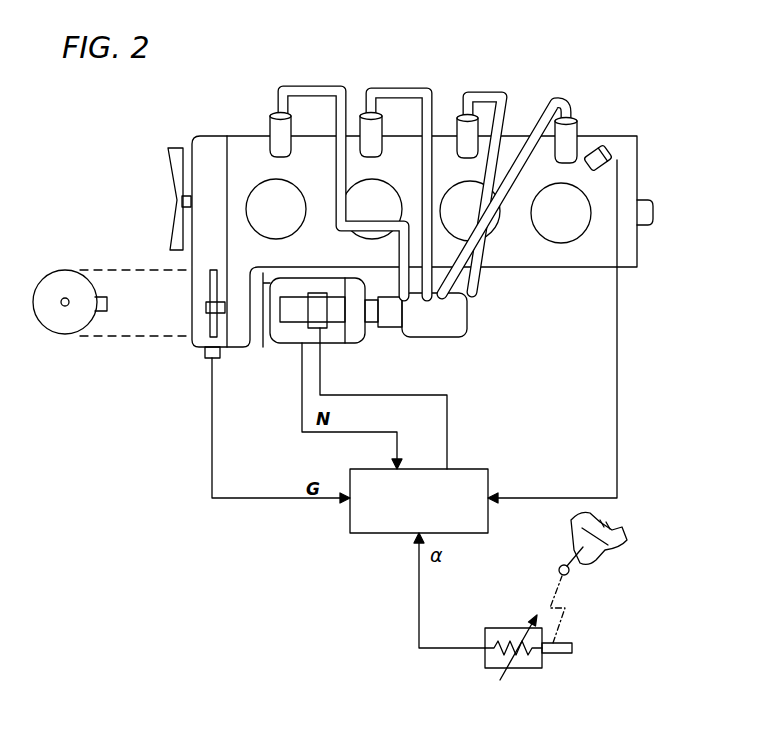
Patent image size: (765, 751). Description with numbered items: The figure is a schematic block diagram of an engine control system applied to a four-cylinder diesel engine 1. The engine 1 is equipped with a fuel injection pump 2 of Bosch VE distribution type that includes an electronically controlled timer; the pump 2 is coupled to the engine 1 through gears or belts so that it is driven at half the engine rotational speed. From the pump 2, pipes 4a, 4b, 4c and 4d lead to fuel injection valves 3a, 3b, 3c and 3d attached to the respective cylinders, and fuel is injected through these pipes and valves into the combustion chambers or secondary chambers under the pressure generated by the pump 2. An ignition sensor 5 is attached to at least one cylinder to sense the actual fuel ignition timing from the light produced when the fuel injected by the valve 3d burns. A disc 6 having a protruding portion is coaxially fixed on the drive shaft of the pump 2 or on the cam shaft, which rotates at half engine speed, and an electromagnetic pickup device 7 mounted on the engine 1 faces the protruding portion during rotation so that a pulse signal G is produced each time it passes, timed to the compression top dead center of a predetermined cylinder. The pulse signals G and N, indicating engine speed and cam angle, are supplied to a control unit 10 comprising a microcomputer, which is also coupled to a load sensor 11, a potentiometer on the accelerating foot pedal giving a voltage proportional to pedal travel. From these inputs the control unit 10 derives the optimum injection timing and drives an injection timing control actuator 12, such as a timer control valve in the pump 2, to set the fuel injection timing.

The diesel engine 1 is at (637, 147).
The fuel injection pump 2 is at (338, 343).
The fuel injection valve 3a is at (271, 126).
The fuel injection valve 3b is at (362, 113).
The fuel injection valve 3c is at (461, 115).
The fuel injection valve 3d is at (577, 132).
The pipe 4a is at (302, 86).
The pipe 4b is at (413, 88).
The pipe 4c is at (506, 88).
The pipe 4d is at (560, 97).
The ignition sensor 5 is at (589, 148).
The disc 6 is at (67, 334).
The electromagnetic pickup device 7 is at (220, 357).
The control unit 10 is at (487, 470).
The load sensor 11 is at (503, 628).
The injection timing control actuator 12 is at (297, 322).